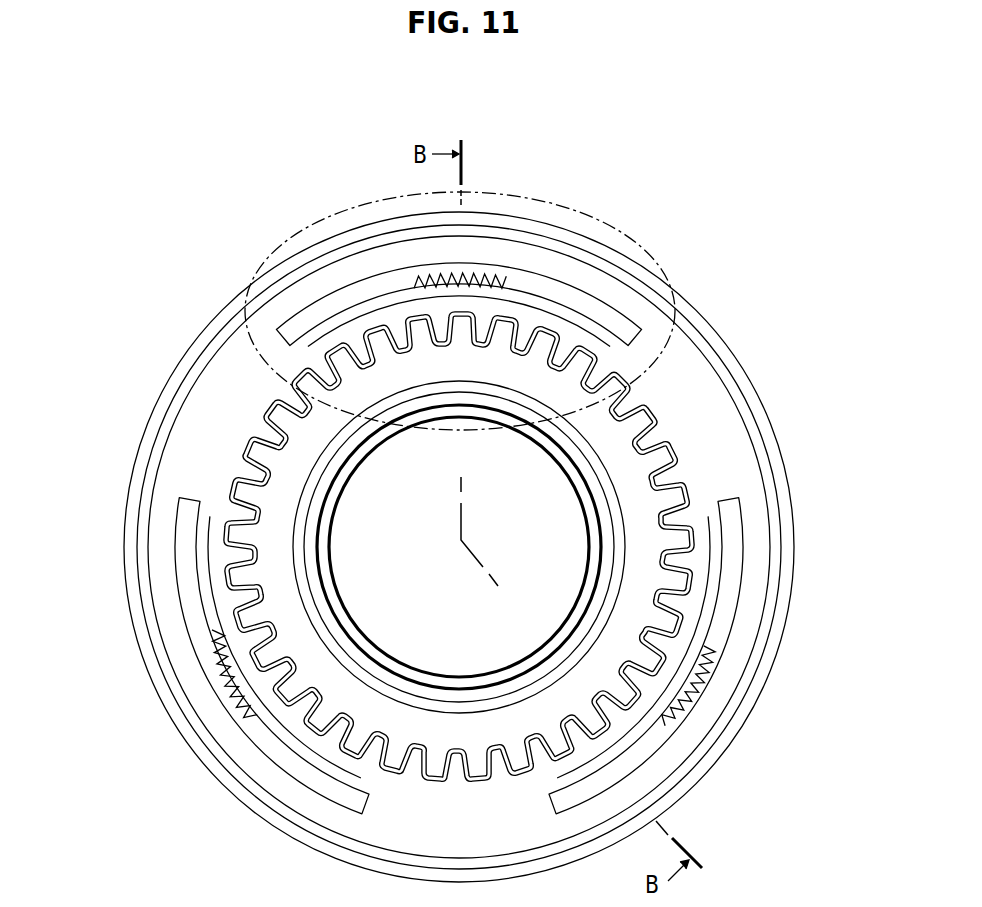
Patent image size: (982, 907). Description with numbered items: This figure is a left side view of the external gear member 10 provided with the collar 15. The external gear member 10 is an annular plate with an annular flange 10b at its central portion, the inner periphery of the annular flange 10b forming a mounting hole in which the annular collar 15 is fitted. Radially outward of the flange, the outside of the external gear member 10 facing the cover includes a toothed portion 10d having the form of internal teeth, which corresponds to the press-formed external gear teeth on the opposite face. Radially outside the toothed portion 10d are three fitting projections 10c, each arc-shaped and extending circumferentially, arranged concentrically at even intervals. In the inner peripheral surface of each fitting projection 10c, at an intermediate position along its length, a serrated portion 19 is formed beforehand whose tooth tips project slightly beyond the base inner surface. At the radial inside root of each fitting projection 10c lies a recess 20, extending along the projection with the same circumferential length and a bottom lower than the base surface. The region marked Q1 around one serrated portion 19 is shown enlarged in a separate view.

The external gear member 10 is at (735, 336).
The annular flange 10b is at (620, 494).
The fitting projection 10c is at (565, 290).
The toothed portion 10d is at (262, 436).
The collar 15 is at (356, 455).
The serrated portion 19 is at (492, 288).
The recess 20 is at (330, 317).
The part of the external gear member Q1 is at (559, 199).